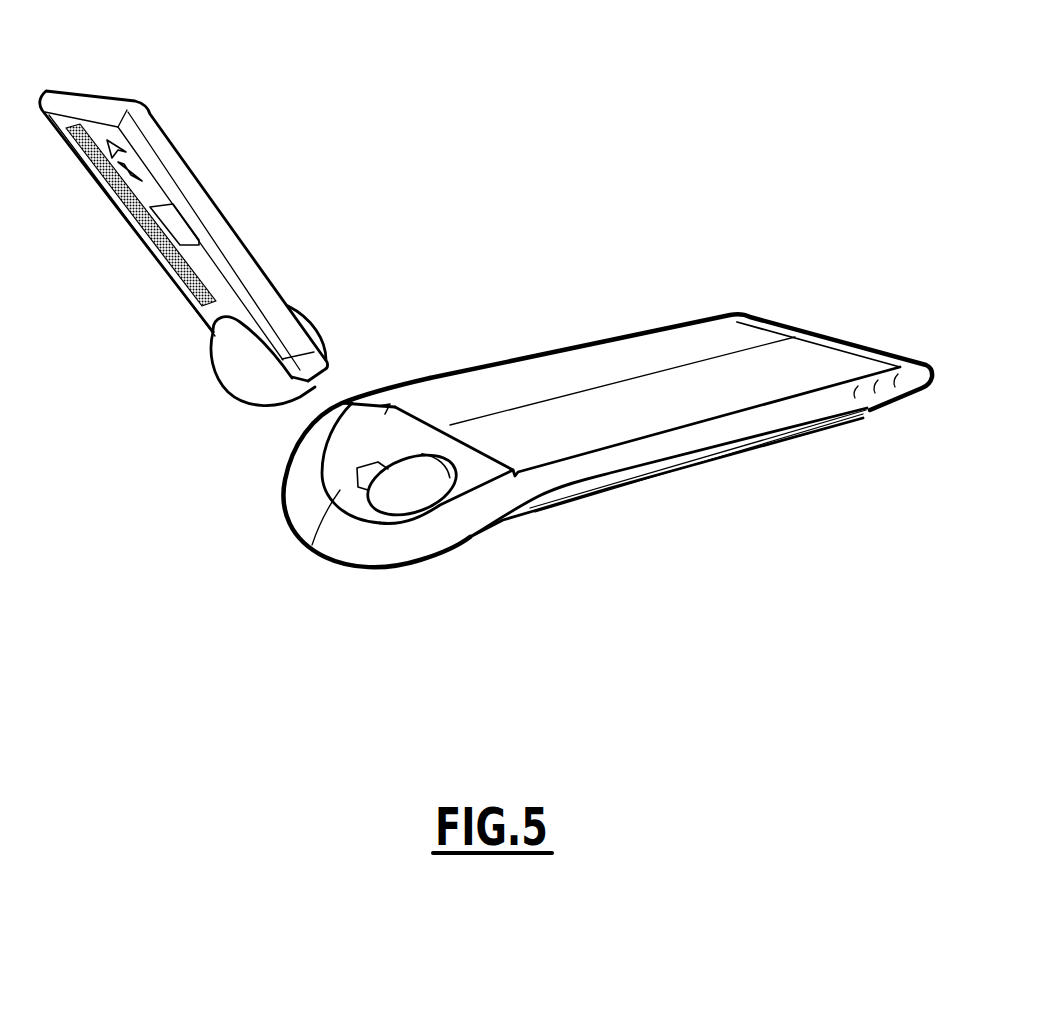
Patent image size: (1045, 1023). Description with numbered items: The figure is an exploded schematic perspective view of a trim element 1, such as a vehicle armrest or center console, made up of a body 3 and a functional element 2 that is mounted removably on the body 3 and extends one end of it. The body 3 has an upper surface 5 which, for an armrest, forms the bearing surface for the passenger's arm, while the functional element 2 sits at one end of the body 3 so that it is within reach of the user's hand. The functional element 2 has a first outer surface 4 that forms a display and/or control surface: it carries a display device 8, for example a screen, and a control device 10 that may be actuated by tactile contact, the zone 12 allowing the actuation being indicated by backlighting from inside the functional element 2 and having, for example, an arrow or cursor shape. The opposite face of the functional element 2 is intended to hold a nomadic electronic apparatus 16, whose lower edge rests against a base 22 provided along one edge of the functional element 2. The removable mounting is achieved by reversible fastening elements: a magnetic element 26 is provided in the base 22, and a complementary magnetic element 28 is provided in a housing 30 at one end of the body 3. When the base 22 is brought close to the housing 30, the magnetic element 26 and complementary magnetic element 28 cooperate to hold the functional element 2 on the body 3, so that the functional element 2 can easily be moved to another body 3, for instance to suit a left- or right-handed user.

The trim element 1 is at (497, 122).
The functional element 2 is at (124, 222).
The body 3 is at (682, 413).
The first outer surface 4 is at (225, 311).
The upper surface 5 is at (657, 358).
The display device 8 is at (163, 268).
The control device 10 is at (120, 158).
The zone allowing actuation 12 is at (173, 227).
The nomadic electronic apparatus 16 is at (163, 153).
The base 22 is at (250, 385).
The magnetic element 26 is at (347, 365).
The complementary magnetic element 28 is at (405, 500).
The housing 30 is at (340, 492).